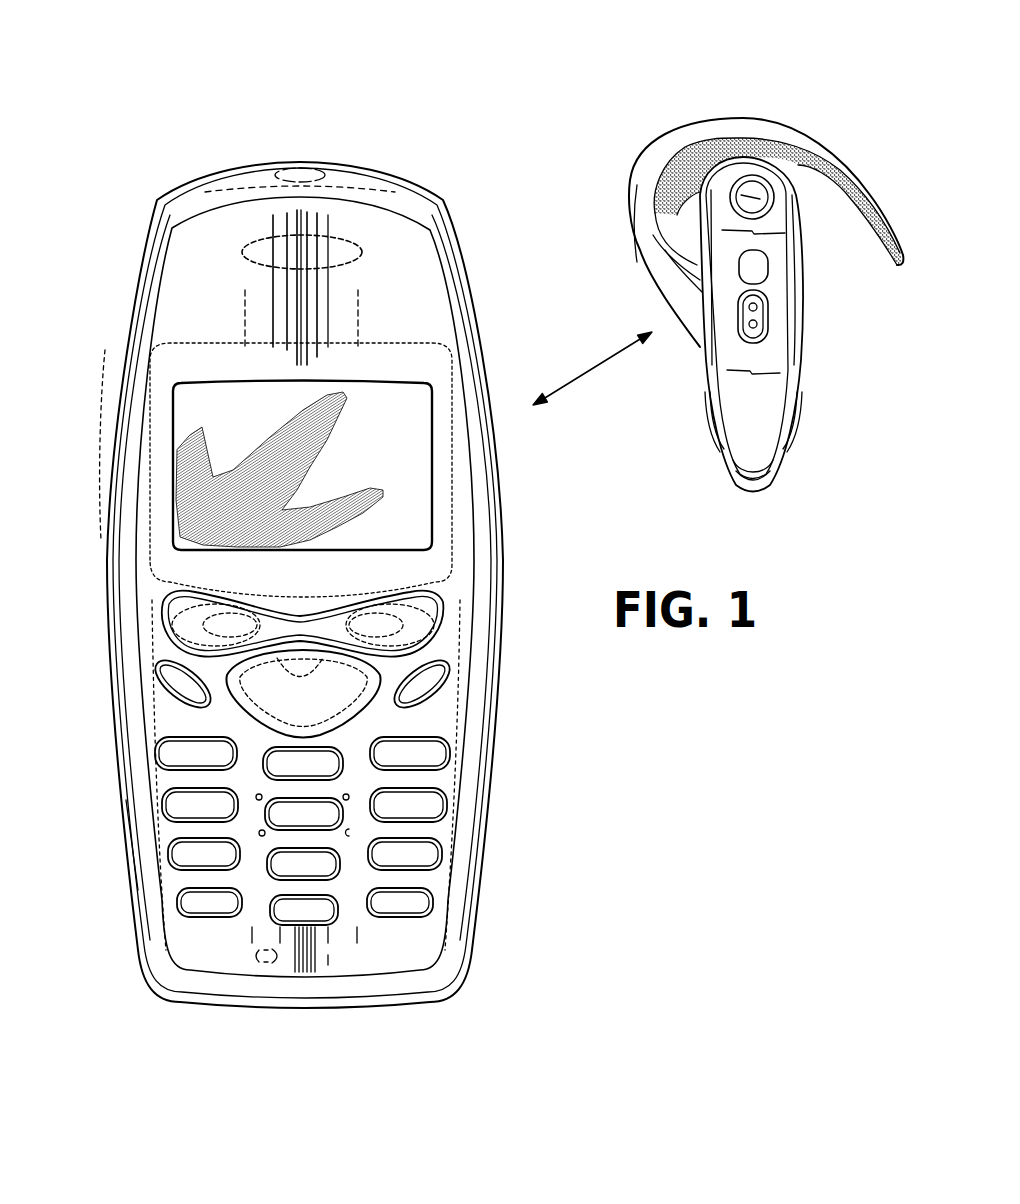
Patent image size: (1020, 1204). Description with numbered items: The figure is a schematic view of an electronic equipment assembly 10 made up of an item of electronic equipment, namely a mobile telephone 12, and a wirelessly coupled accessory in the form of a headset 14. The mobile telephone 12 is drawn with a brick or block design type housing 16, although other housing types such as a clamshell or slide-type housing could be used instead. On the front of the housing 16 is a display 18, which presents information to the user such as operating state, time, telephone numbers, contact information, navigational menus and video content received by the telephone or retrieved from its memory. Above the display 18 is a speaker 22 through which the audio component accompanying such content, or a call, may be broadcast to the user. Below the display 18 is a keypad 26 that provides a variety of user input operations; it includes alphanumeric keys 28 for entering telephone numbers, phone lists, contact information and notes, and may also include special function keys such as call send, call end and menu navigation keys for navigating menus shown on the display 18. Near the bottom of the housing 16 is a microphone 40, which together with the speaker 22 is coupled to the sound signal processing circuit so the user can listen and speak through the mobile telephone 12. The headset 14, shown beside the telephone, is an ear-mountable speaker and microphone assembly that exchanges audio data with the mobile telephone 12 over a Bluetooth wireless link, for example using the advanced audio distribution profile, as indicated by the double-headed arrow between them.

The electronic equipment assembly 10 is at (182, 52).
The mobile telephone 12 is at (163, 200).
The headset 14 is at (683, 127).
The housing 16 is at (130, 297).
The display 18 is at (185, 418).
The speaker 22 is at (270, 257).
The keypad 26 is at (142, 848).
The alphanumeric keys 28 is at (255, 677).
The microphone 40 is at (270, 960).